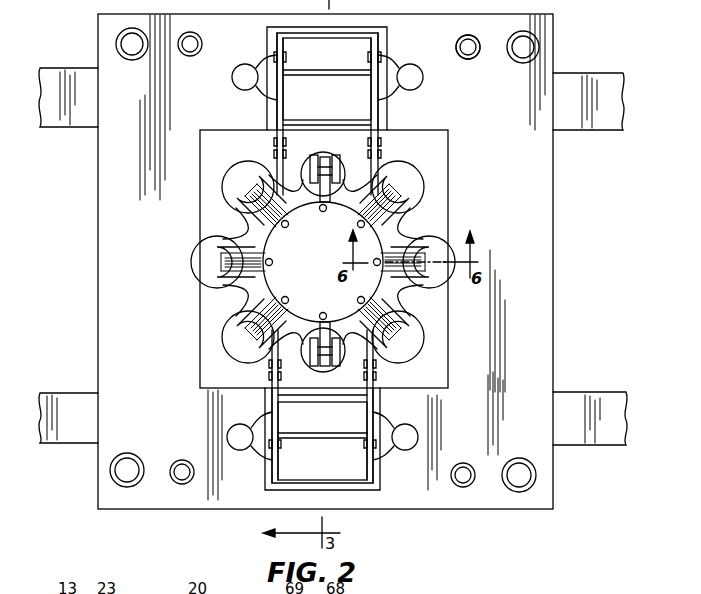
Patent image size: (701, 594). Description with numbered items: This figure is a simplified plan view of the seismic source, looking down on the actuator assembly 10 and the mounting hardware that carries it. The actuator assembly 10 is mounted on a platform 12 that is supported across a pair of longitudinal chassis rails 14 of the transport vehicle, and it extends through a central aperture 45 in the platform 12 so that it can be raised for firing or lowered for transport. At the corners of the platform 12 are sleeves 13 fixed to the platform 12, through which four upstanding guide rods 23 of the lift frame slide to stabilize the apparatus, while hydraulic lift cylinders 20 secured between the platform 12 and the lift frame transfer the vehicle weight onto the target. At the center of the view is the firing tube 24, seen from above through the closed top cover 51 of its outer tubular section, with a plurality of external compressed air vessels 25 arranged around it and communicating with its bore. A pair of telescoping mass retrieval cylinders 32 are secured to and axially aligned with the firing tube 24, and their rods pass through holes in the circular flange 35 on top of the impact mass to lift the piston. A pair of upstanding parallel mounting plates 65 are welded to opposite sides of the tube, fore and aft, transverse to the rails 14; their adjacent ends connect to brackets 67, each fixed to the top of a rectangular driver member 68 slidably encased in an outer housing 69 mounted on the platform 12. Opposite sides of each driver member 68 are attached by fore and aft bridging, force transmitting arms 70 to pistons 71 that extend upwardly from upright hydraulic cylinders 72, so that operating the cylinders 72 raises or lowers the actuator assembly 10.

The actuator assembly 10 is at (419, 304).
The platform 12 is at (471, 30).
The sleeves 13 is at (118, 40).
The longitudinal chassis rails 14 is at (603, 73).
The hydraulic lift cylinders 20 is at (190, 57).
The guide rods 23 is at (132, 44).
The firing tube 24 is at (307, 270).
The compressed air vessels 25 is at (424, 184).
The mass retrieval cylinders 32 is at (272, 370).
The circular flange 35 is at (408, 228).
The central aperture 45 is at (202, 160).
The top cover 51 is at (259, 287).
The mounting plates 65 is at (275, 140).
The brackets 67 is at (380, 405).
The driver members 68 is at (275, 488).
The outer housings 69 is at (266, 472).
The force transmitting arms 70 is at (252, 66).
The pistons 71 is at (410, 66).
The hydraulic cylinders 72 is at (419, 66).